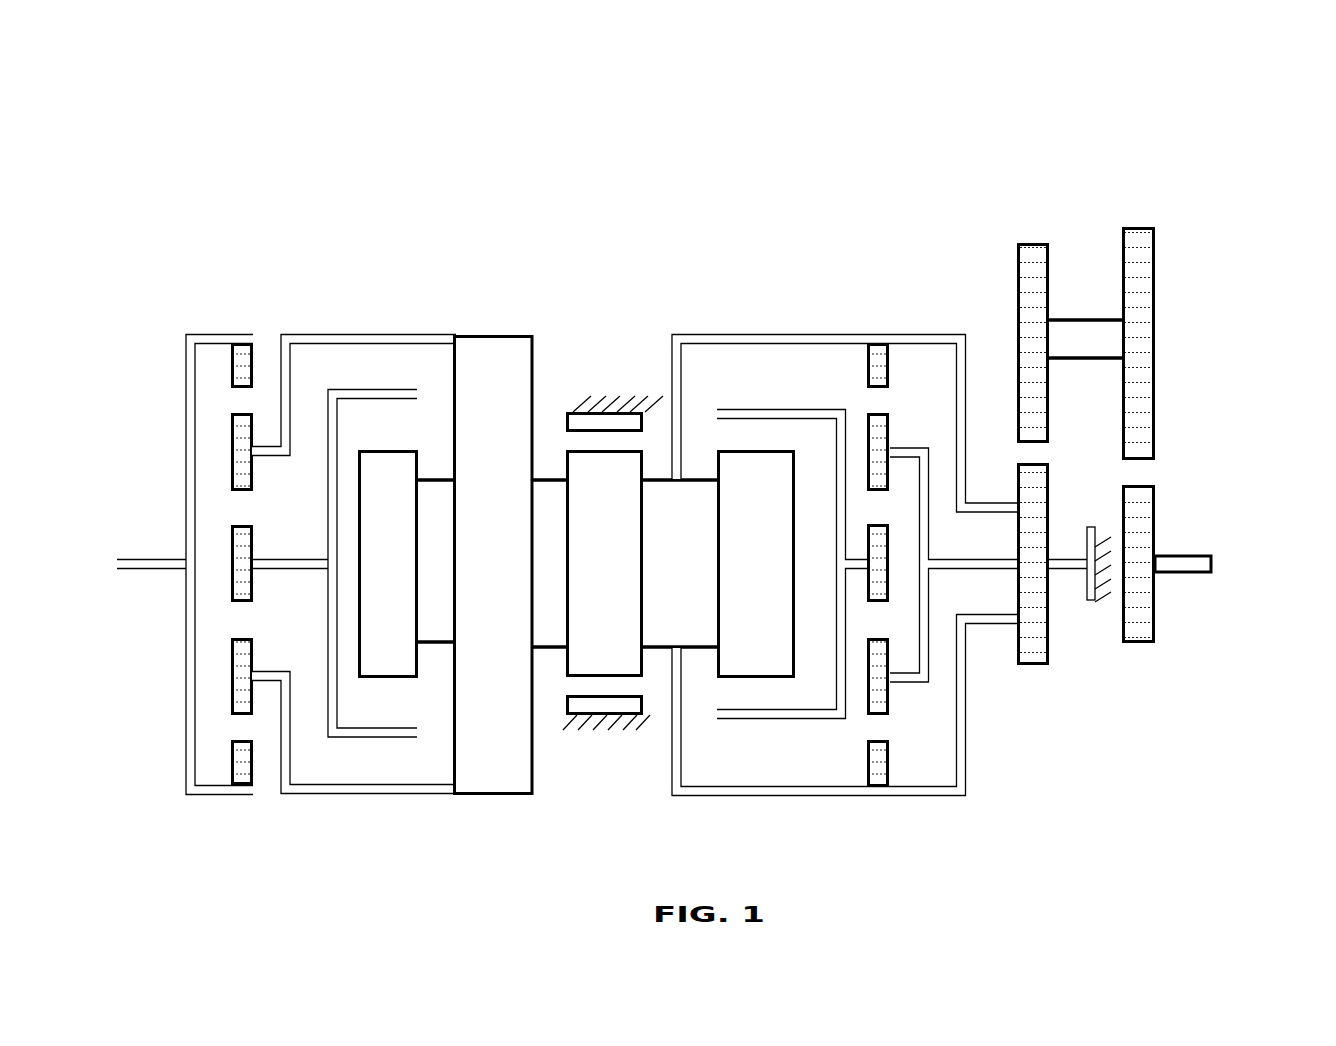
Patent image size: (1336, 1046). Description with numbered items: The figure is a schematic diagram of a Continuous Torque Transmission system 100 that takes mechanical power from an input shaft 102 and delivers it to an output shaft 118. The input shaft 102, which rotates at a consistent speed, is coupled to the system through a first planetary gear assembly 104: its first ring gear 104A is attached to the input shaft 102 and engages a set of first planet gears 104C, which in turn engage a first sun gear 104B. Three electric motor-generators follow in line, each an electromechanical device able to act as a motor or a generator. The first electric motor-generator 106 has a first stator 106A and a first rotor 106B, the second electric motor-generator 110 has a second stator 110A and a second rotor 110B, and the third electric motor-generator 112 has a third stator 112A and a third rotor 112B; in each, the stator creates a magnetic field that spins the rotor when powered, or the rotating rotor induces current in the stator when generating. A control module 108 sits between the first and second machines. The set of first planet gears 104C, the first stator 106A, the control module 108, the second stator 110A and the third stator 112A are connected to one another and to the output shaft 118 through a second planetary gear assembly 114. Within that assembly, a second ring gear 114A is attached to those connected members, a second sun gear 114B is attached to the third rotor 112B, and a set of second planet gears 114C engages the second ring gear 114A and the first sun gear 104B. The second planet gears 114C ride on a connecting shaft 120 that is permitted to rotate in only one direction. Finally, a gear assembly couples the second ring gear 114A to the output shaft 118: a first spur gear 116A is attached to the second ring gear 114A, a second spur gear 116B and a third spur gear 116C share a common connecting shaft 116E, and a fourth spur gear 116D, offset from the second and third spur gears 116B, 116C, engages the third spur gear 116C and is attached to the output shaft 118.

The Continuous Torque Transmission (CTT) system 100 is at (1228, 112).
The input shaft 102 is at (150, 560).
The first planetary gear assembly 104 is at (163, 318).
The first ring gear 104A is at (236, 332).
The first sun gear 104B is at (232, 562).
The set of first planet gears 104C is at (232, 703).
The first electric motor-generator 106 is at (403, 268).
The first stator 106A is at (372, 458).
The first rotor 106B is at (393, 390).
The control module 108 is at (492, 348).
The second electric motor-generator 110 is at (620, 285).
The second stator 110A is at (592, 465).
The second rotor 110B is at (618, 418).
The third electric motor-generator 112 is at (796, 268).
The third stator 112A is at (767, 470).
The third rotor 112B is at (793, 417).
The second planetary gear assembly 114 is at (905, 322).
The second ring gear 114A is at (890, 760).
The second sun gear 114B is at (892, 593).
The set of second planet gears 114C is at (892, 698).
The first spur gear 116A is at (1048, 642).
The second spur gear 116B is at (1015, 270).
The third spur gear 116C is at (1160, 268).
The fourth spur gear 116D is at (1160, 513).
The common connecting shaft 116E is at (1077, 323).
The output shaft 118 is at (1190, 575).
The connecting shaft 120 is at (1060, 570).